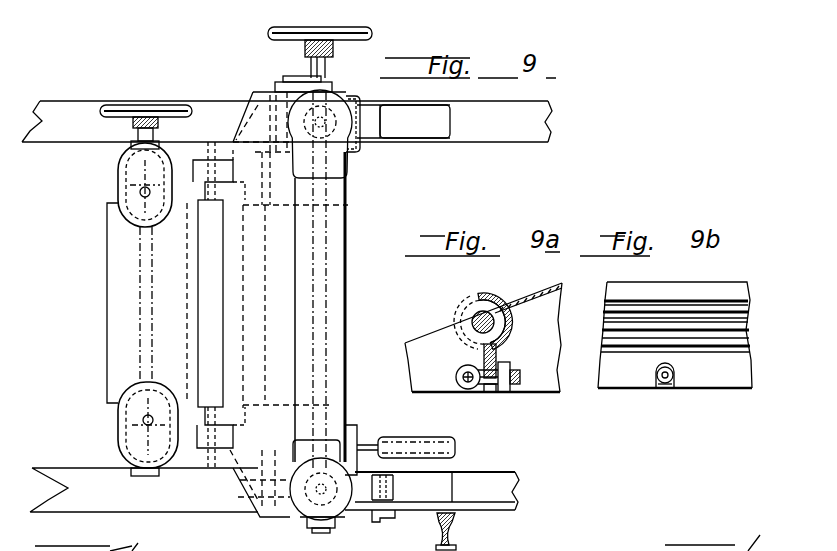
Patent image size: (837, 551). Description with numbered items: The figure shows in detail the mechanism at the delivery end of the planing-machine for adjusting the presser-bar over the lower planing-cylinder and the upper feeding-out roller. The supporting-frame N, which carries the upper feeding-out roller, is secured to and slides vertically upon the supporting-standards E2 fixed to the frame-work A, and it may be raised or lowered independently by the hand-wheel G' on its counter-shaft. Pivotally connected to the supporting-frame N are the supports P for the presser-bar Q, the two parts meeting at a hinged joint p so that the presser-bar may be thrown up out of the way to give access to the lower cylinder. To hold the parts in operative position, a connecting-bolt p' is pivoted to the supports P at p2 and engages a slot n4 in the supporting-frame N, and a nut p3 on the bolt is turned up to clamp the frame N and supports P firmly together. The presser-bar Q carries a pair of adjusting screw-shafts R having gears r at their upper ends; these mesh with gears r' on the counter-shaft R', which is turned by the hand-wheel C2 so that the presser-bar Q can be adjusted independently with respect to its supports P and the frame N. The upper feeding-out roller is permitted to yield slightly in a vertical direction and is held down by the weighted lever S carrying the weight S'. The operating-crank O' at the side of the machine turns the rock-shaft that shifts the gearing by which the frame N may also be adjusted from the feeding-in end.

In FIG. 9, the frame-work A is at (78, 118).
In FIG. 9, the hand-wheel C2 is at (160, 101).
In FIG. 9, the hand-wheel G' is at (304, 59).
In FIG. 9, the supporting-standards E2 is at (421, 150).
In FIG. 9, the supporting-frame N is at (258, 530).
In FIG. 9a, the supporting-frame N is at (548, 305).
In FIG. 9b, the supporting-frame N is at (606, 300).
In FIG. 9, the gears r' is at (126, 306).
In FIG. 9, the adjusting screw-shafts R is at (116, 309).
In FIG. 9, the gears r is at (105, 306).
In FIG. 9, the counter-shaft R' is at (110, 304).
In FIG. 9, the presser-bar Q is at (107, 347).
In FIG. 9, the supports P is at (180, 470).
In FIG. 9a, the supports P is at (440, 326).
In FIG. 9, the hinged joint p is at (223, 305).
In FIG. 9, the weighted lever S is at (366, 429).
In FIG. 9, the weight S' is at (416, 433).
In FIG. 9, the operating-crank O' is at (367, 530).
In FIG. 9a, the pivot p2 is at (467, 390).
In FIG. 9a, the connecting-bolt p' is at (499, 401).
In FIG. 9b, the connecting-bolt p' is at (650, 410).
In FIG. 9a, the nut p3 is at (512, 370).
In FIG. 9b, the nut p3 is at (680, 373).
In FIG. 9a, the slot n4 is at (500, 392).
In FIG. 9b, the slot n4 is at (672, 384).